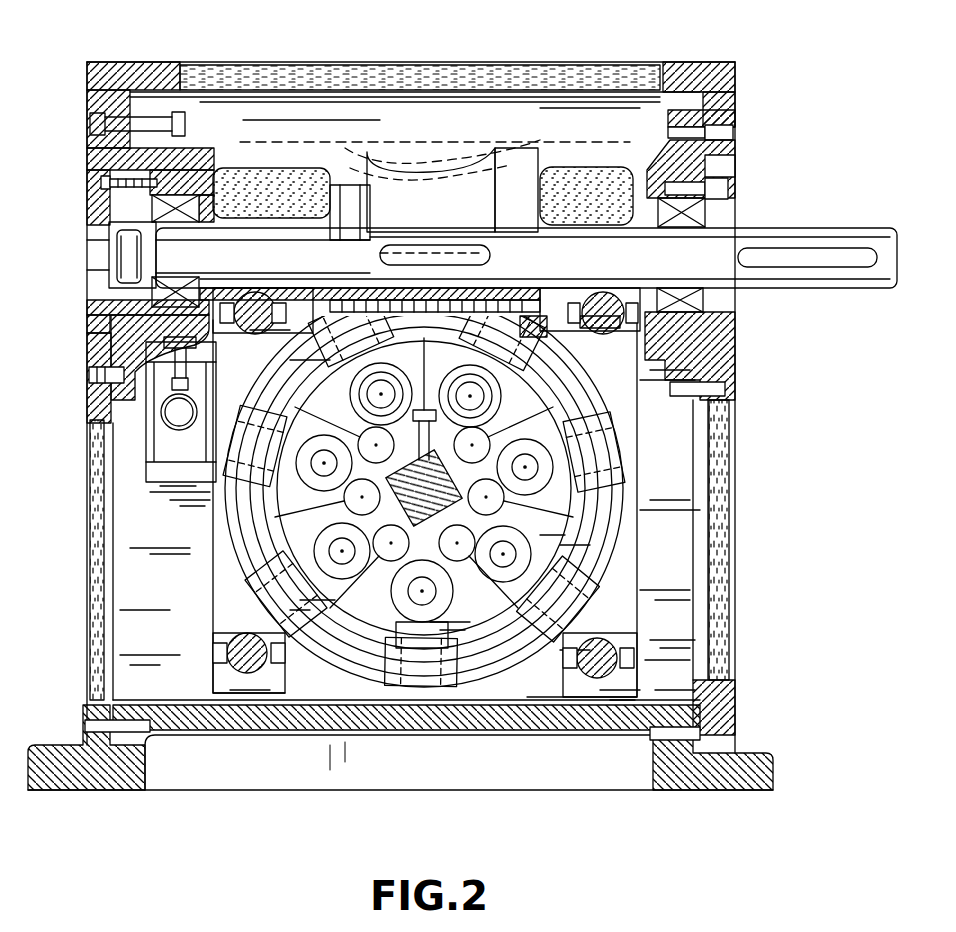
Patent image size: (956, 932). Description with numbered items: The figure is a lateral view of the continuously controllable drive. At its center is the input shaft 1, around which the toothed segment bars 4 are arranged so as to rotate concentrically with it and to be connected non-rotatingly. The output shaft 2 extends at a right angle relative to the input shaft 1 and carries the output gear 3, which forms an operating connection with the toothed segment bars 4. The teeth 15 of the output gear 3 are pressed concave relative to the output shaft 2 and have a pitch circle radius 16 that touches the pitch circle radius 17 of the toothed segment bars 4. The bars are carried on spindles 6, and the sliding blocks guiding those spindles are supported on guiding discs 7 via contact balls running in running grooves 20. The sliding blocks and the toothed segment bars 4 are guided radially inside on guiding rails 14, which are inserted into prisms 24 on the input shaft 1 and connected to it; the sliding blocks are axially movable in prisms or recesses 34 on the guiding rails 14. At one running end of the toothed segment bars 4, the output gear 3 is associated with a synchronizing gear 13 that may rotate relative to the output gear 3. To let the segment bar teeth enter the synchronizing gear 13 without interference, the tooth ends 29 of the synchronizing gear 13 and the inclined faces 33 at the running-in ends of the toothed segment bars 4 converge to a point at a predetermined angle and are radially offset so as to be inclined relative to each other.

The input shaft 1 is at (548, 462).
The output shaft 2 is at (766, 233).
The output gear 3 is at (473, 190).
The toothed segment bars 4 is at (508, 400).
The spindles 6 is at (430, 604).
The guiding discs 7 is at (618, 601).
The synchronizing gear 13 is at (543, 150).
The guiding rails 14 is at (504, 499).
The teeth 15 is at (395, 163).
The pitch circle radius 16 is at (447, 173).
The pitch circle radius 17 is at (523, 384).
The running grooves 20 is at (515, 642).
The prisms 24 is at (385, 585).
The tooth ends 29 is at (523, 153).
The inclined faces 33 is at (548, 568).
The recesses 34 is at (395, 488).